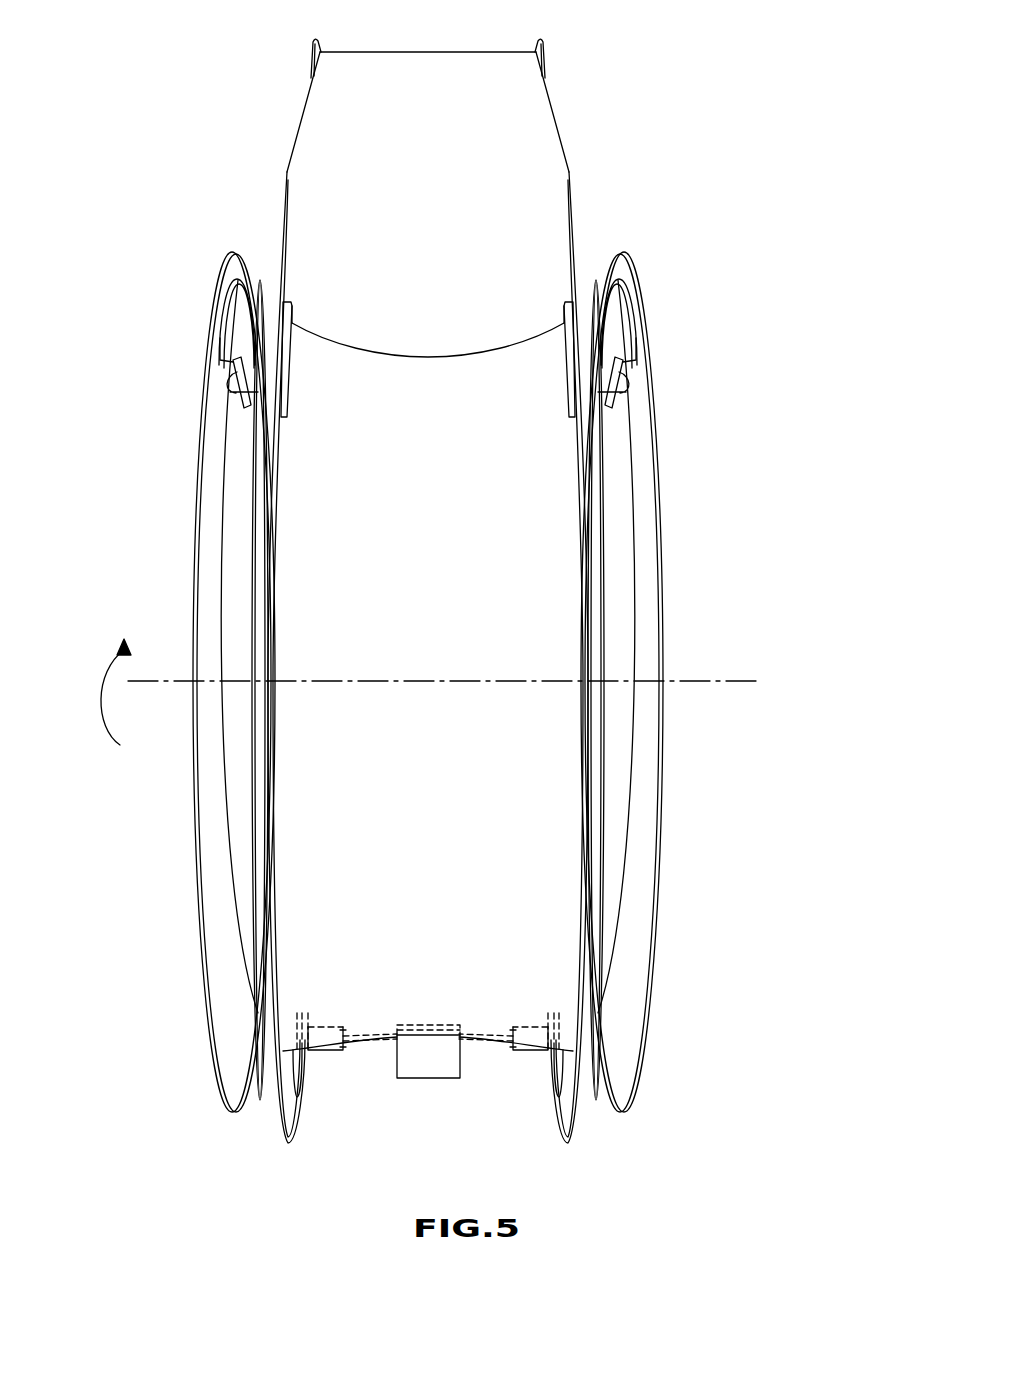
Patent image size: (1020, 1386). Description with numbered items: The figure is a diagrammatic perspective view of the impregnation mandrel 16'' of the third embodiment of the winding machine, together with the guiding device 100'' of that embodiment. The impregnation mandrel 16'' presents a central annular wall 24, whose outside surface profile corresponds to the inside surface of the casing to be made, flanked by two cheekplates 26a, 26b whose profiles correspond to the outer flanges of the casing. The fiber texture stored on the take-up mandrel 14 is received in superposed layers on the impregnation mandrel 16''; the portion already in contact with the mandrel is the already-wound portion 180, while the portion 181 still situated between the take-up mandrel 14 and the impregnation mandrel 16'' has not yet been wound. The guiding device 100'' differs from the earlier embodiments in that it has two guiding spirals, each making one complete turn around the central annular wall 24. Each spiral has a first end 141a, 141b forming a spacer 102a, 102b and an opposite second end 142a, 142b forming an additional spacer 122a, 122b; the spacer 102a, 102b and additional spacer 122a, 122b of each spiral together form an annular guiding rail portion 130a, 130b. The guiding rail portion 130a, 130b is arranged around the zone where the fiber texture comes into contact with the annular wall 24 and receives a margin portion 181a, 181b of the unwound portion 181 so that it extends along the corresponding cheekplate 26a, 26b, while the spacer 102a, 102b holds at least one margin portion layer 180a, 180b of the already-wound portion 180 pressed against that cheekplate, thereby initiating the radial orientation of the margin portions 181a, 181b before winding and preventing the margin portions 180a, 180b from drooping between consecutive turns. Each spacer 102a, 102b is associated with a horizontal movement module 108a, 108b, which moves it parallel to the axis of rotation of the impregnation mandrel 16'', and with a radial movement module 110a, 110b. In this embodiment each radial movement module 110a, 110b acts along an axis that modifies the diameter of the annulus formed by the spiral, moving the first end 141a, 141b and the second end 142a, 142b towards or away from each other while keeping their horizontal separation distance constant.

The take-up mandrel 14 is at (548, 43).
The portion of the fiber texture not already wound 181 is at (531, 127).
The margin portion of the not-yet-wound fiber texture portion 181a is at (287, 268).
The margin portion of the not-yet-wound fiber texture portion 181b is at (569, 268).
The additional spacer 122a is at (292, 303).
The additional spacer 122b is at (564, 303).
The second end of the guiding spiral 142a is at (300, 322).
The second end of the guiding spiral 142b is at (556, 322).
The radial spacer 102a is at (254, 314).
The radial spacer 102b is at (602, 314).
The margin portion of the already-wound fiber texture portion 180a is at (223, 333).
The margin portion of the already-wound fiber texture portion 180b is at (633, 333).
The first end of the guiding spiral 141a is at (237, 375).
The first end of the guiding spiral 141b is at (619, 375).
The annular guiding rail portion 130a is at (252, 421).
The annular guiding rail portion 130b is at (604, 421).
The cheekplate 26a is at (204, 520).
The cheekplate 26b is at (652, 520).
The central annular wall 24 is at (243, 820).
The already-wound portion of the fiber texture 180 is at (455, 877).
The impregnation mandrel 16'' is at (351, 1046).
The radial movement module 110a is at (328, 1050).
The radial movement module 110b is at (528, 1050).
The horizontal movement module 108a is at (431, 1079).
The horizontal movement module 108b is at (428, 1079).
The guiding device 100'' is at (261, 1185).